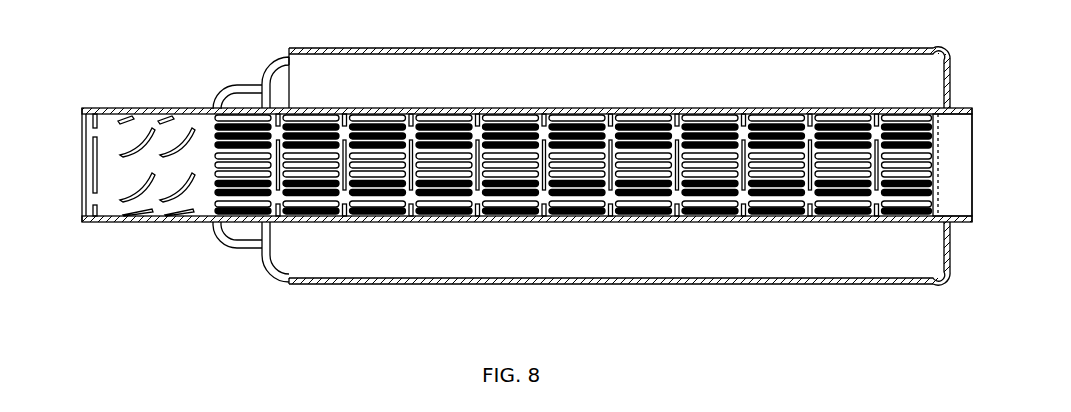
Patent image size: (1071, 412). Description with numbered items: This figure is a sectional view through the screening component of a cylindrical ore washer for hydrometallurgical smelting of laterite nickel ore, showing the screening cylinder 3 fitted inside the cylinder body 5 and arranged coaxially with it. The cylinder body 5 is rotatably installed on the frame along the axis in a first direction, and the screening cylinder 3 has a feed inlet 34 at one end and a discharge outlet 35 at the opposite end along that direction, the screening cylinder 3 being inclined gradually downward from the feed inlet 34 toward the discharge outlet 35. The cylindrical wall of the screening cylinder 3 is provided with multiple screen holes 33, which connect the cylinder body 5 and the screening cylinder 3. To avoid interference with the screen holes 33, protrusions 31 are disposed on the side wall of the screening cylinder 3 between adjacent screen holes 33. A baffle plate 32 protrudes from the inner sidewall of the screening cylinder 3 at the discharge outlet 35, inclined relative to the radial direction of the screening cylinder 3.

The screening cylinder 3 is at (447, 205).
The cylinder body 5 is at (490, 283).
The protrusions 31 is at (243, 207).
The baffle plate 32 is at (180, 130).
The screen holes 33 is at (377, 172).
The feed inlet 34 is at (960, 142).
The discharge outlet 35 is at (105, 124).